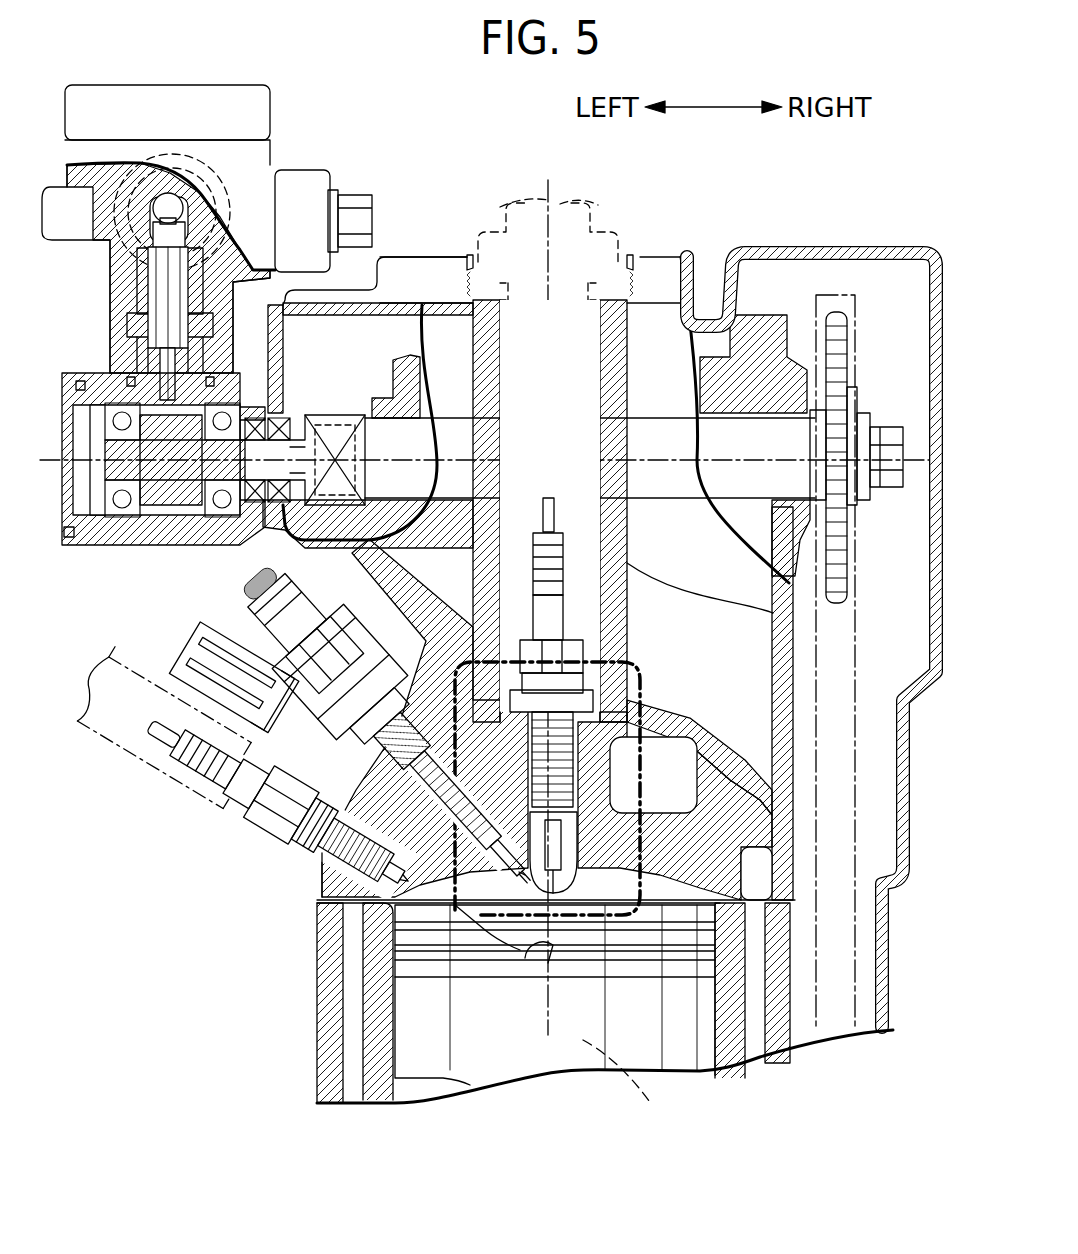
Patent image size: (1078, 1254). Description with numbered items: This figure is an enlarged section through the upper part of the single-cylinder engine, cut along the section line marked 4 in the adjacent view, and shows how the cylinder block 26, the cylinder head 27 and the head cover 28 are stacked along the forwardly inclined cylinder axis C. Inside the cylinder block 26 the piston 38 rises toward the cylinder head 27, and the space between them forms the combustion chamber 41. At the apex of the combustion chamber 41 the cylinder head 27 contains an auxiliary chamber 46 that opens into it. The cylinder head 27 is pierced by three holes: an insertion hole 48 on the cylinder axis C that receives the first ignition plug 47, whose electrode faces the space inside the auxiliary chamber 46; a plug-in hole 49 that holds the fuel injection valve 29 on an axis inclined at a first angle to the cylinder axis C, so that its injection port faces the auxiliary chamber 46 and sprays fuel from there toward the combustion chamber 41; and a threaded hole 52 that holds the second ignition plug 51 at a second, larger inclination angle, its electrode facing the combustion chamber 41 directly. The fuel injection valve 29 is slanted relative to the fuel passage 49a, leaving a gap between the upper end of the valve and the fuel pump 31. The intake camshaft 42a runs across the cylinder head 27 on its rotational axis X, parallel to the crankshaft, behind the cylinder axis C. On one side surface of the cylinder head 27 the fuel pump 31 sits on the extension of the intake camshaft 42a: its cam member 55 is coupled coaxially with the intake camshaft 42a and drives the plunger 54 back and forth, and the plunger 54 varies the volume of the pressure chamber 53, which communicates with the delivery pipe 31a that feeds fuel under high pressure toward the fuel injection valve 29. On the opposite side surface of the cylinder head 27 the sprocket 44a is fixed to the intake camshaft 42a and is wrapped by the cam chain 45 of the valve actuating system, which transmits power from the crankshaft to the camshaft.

The cylinder block 26 is at (318, 1043).
The cylinder head 27 is at (320, 888).
The head cover 28 is at (760, 313).
The fuel injection valve 29 is at (405, 668).
The fuel pump 31 is at (268, 126).
The delivery pipe 31a is at (232, 184).
The piston 38 is at (405, 1006).
The combustion chamber 41 is at (686, 888).
The intake camshaft 42a is at (745, 528).
The sprocket 44a is at (848, 340).
The cam chain 45 is at (858, 672).
The auxiliary chamber 46 is at (566, 870).
The first ignition plug 47 is at (582, 645).
The insertion hole 48 is at (603, 765).
The plug-in hole 49 is at (478, 768).
The fuel passage 49a is at (517, 846).
The second ignition plug 51 is at (268, 832).
The threaded hole 52 is at (372, 852).
The pressure chamber 53 is at (168, 196).
The plunger 54 is at (150, 305).
The cam member 55 is at (163, 512).
The FIG. 4 view region 4 is at (648, 676).
The rotational axis X is at (915, 452).
The cylinder axis C is at (652, 1105).